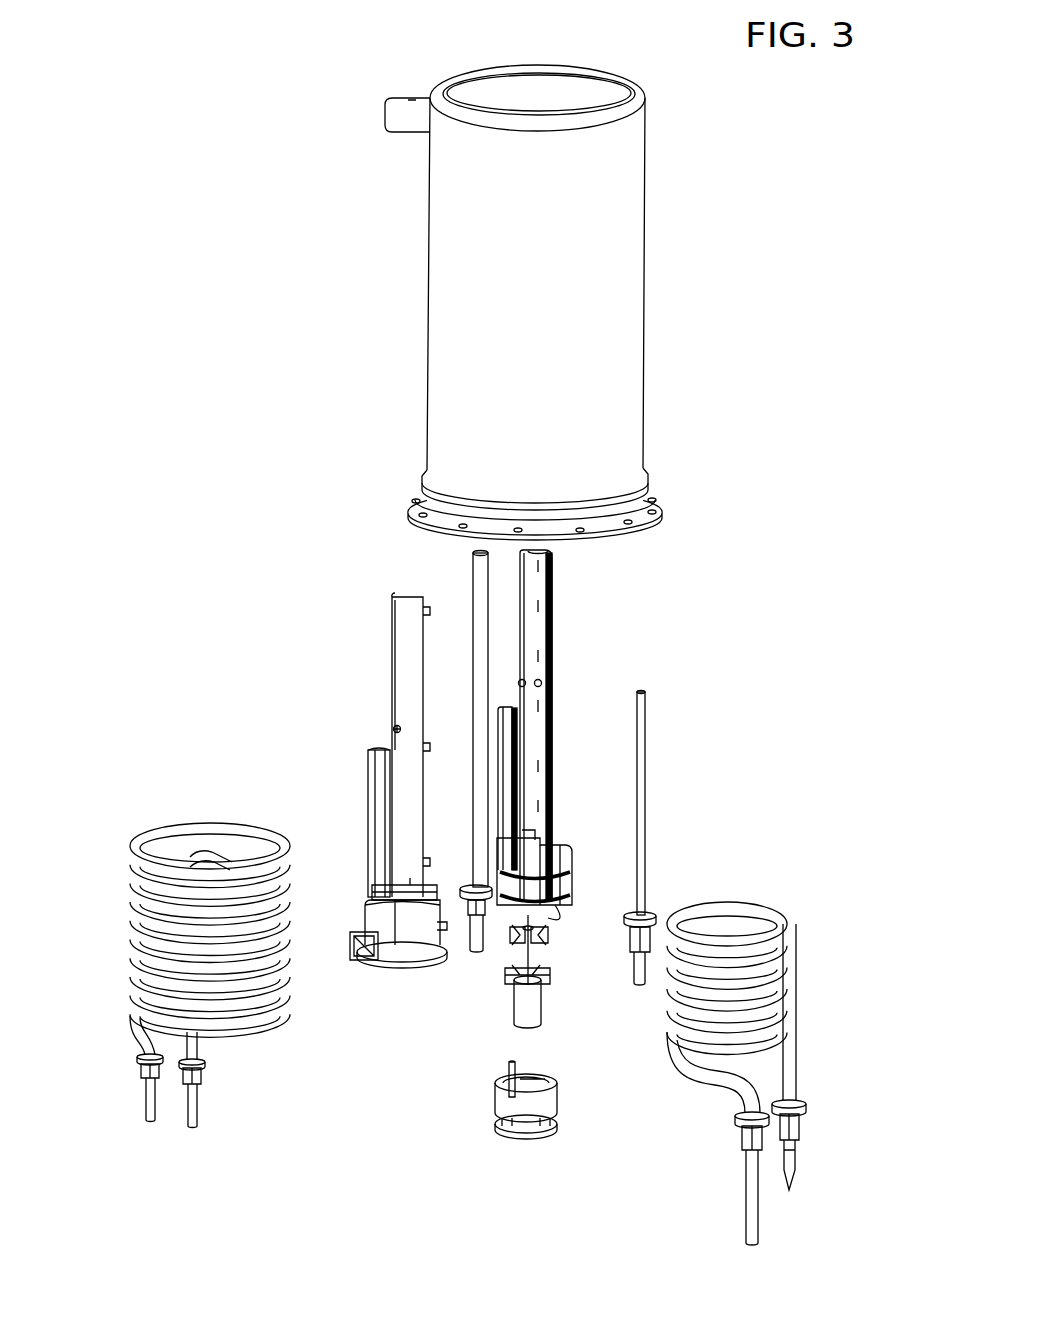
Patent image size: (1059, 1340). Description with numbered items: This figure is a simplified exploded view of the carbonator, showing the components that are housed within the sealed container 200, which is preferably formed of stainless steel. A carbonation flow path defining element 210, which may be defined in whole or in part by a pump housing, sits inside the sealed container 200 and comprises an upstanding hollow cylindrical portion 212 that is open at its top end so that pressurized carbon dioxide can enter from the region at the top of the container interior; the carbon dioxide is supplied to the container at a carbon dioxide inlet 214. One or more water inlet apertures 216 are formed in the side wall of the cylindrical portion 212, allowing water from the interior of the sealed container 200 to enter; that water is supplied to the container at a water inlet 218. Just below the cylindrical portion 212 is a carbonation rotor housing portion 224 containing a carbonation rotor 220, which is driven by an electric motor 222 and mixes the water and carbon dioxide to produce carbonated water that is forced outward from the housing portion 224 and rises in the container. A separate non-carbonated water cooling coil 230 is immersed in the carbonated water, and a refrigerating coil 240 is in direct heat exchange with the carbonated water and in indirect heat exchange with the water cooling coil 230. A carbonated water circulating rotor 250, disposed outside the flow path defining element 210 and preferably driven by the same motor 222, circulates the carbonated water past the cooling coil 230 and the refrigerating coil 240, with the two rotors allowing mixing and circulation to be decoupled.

The sealed container 200 is at (643, 272).
The carbonation flow path defining element 210 is at (556, 604).
The upstanding hollow cylindrical portion 212 is at (530, 725).
The carbon dioxide inlet 214 is at (478, 565).
The water inlet apertures 216 is at (538, 683).
The water inlet 218 is at (641, 785).
The carbonation rotor 220 is at (545, 935).
The electric motor 222 is at (540, 1100).
The carbonation rotor housing portion 224 is at (548, 855).
The non-carbonated water cooling coil 230 is at (135, 900).
The refrigerating coil 240 is at (752, 970).
The carbonated water circulating rotor 250 is at (505, 973).